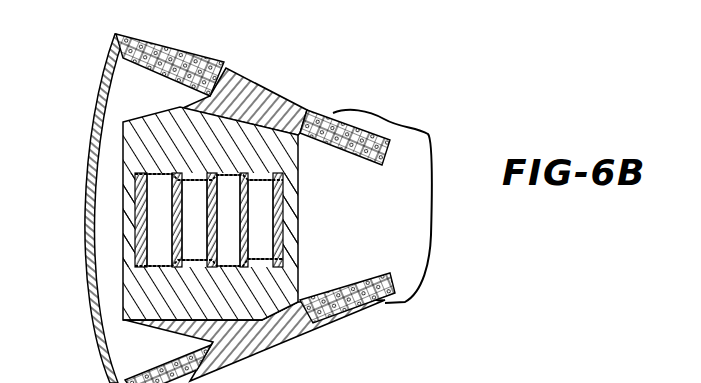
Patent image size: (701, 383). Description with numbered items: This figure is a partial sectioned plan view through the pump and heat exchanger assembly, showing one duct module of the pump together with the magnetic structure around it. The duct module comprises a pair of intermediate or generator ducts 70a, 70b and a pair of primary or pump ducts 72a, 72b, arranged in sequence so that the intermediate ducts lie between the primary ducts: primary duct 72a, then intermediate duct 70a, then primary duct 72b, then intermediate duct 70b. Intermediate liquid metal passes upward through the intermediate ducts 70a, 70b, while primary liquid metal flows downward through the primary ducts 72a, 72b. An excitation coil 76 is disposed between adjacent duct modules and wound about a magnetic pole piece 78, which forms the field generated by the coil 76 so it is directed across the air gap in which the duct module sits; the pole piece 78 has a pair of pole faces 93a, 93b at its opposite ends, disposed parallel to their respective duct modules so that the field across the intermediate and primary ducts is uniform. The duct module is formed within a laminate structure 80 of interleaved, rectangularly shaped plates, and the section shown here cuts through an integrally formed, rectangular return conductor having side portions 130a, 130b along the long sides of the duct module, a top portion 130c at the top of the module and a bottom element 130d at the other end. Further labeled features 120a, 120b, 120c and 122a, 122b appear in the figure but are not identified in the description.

The intermediate duct 70a is at (183, 180).
The intermediate duct 70b is at (267, 203).
The primary duct 72a is at (157, 222).
The primary duct 72b is at (228, 192).
The excitation coil 76 is at (418, 139).
The magnetic pole piece 78 is at (243, 77).
The laminate structure 80 is at (113, 290).
The pole face 93a is at (184, 180).
The pole face 93b is at (190, 264).
The first membrane layer 120a is at (142, 246).
The second membrane layer 120b is at (233, 262).
The third membrane layer 120c is at (249, 243).
The first sleeve 122a is at (130, 198).
The second sleeve 122b is at (286, 226).
The side portion 130a is at (293, 278).
The side portion 130b is at (285, 160).
The top portion 130c is at (130, 180).
The bottom element 130d is at (283, 195).